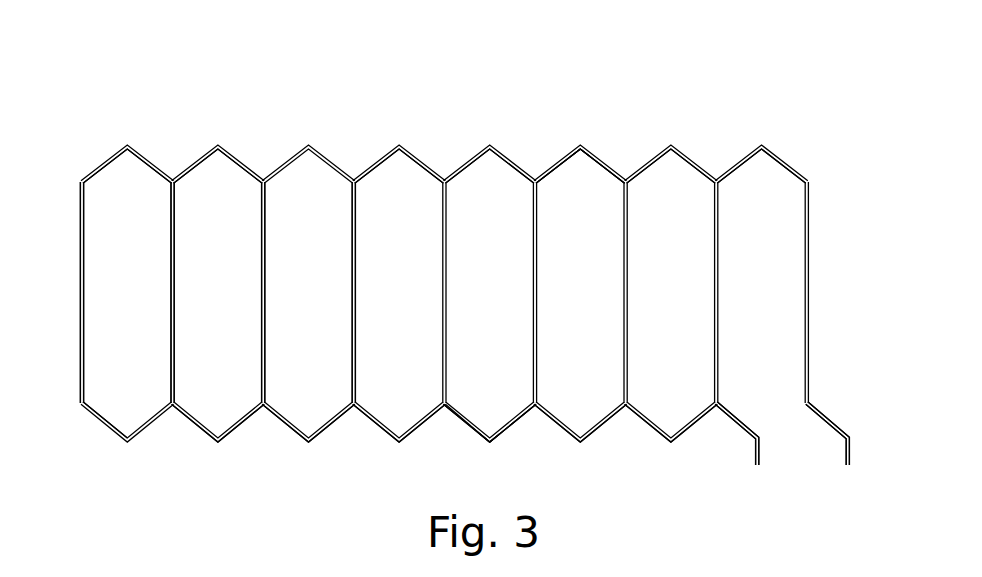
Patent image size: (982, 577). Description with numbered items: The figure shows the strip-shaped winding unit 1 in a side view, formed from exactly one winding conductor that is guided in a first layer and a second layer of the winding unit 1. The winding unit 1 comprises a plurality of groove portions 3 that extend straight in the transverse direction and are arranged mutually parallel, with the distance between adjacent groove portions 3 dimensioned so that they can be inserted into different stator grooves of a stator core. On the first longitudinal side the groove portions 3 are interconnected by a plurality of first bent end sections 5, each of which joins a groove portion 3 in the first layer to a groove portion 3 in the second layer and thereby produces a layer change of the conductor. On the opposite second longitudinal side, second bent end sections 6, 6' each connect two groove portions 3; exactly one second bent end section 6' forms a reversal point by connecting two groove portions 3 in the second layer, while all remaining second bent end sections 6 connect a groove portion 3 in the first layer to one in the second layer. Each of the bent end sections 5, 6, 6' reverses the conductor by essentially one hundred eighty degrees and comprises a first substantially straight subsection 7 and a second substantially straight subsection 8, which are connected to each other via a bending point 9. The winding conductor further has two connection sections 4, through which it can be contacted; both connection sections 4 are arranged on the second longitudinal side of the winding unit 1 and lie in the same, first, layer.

The winding unit 1 is at (274, 124).
The groove portion 3 is at (80, 272).
The connection section 4 is at (740, 427).
The first bent end section 5 is at (118, 151).
The second bent end section 6 is at (443, 453).
The second bent end section 6' is at (102, 442).
The first substantially straight subsection 7 is at (560, 163).
The second substantially straight subsection 8 is at (603, 160).
The bending point 9 is at (582, 147).